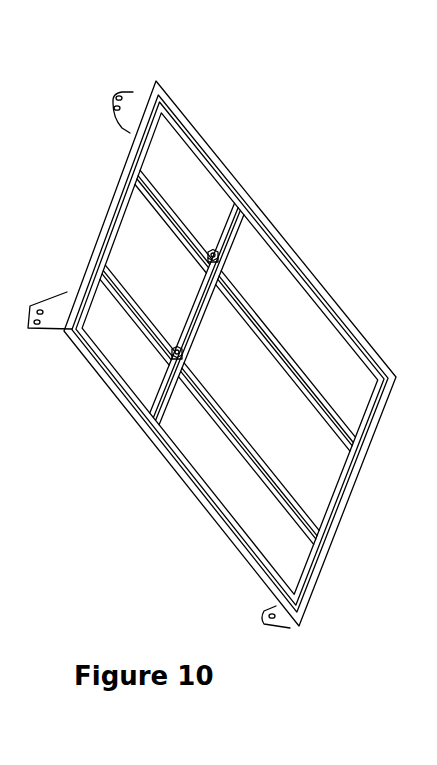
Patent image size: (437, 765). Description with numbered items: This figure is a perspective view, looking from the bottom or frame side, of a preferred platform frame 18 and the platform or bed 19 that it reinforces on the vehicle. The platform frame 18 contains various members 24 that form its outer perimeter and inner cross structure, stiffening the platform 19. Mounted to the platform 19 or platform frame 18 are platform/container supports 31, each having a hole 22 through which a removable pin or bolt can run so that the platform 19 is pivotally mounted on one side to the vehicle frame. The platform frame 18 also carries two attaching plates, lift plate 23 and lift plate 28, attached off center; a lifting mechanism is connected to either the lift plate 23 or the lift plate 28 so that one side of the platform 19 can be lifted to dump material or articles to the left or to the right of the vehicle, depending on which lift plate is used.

The platform frame 18 is at (212, 152).
The platform or bed 19 is at (247, 413).
The hole 22 is at (113, 108).
The lift plate 23 is at (215, 250).
The members 24 is at (200, 327).
The lift plate 28 is at (177, 365).
The platform/container support 31 is at (130, 93).